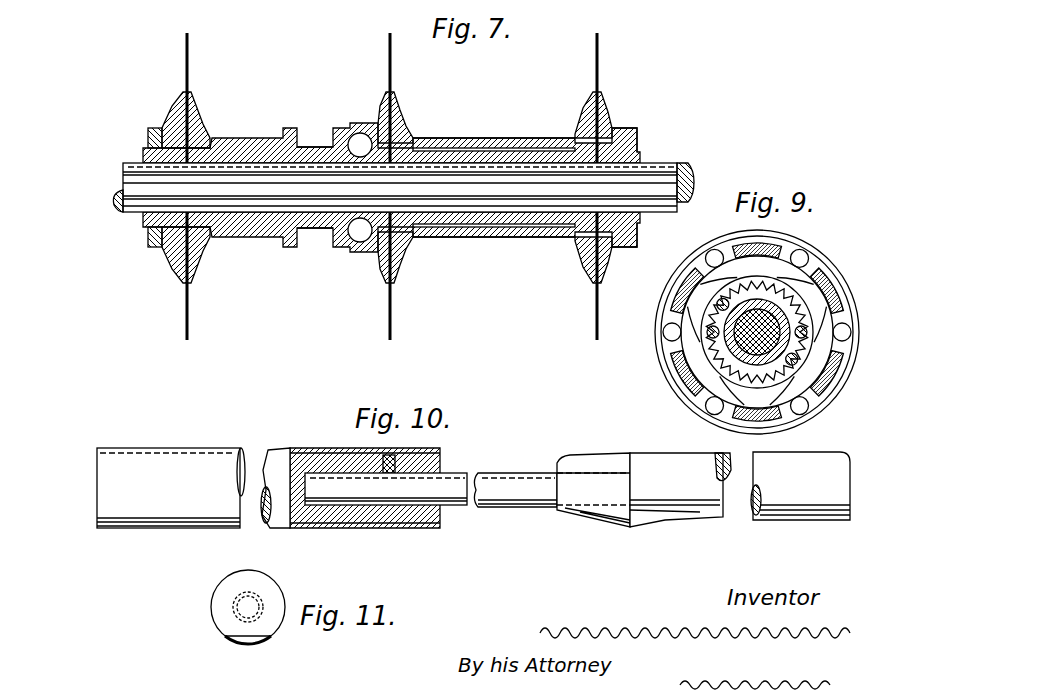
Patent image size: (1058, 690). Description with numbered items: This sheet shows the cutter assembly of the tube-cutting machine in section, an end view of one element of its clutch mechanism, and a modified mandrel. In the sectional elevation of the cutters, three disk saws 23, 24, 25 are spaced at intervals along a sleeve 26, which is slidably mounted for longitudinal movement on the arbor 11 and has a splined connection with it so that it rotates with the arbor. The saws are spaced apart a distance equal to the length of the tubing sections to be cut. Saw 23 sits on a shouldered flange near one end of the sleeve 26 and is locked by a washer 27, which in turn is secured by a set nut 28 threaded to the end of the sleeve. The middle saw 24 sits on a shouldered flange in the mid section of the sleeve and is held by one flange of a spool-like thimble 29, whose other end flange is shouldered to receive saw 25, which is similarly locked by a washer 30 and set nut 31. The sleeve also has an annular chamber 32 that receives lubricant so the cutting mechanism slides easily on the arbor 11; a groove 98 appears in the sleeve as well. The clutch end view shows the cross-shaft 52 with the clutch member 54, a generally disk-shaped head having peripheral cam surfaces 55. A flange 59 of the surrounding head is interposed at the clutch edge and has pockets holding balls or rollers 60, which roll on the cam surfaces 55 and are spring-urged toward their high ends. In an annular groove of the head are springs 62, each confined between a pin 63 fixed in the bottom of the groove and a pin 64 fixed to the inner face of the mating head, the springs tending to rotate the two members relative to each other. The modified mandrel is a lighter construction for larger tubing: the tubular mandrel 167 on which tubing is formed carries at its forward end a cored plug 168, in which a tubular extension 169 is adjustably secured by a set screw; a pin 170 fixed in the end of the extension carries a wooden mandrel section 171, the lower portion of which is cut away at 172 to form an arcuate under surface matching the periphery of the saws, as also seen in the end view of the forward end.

In FIG. 7, the arbor 11 is at (660, 162).
In FIG. 7, the saw 23 is at (190, 66).
In FIG. 7, the middle saw 24 is at (393, 80).
In FIG. 7, the saw 25 is at (600, 66).
In FIG. 7, the sleeve 26 is at (248, 140).
In FIG. 7, the washer 27 is at (172, 110).
In FIG. 7, the set nut 28 is at (150, 137).
In FIG. 7, the spool-like thimble 29 is at (498, 140).
In FIG. 7, the washer 30 is at (608, 104).
In FIG. 7, the set nut 31 is at (635, 130).
In FIG. 7, the annular chamber 32 is at (360, 133).
In FIG. 7, the groove 98 is at (316, 142).
In FIG. 9, the cross-shaft 52 is at (740, 352).
In FIG. 9, the clutch member 54 is at (712, 288).
In FIG. 9, the cam surfaces 55 is at (822, 292).
In FIG. 9, the flange 59 is at (780, 250).
In FIG. 9, the balls or rollers 60 is at (722, 230).
In FIG. 9, the springs 62 is at (726, 298).
In FIG. 9, the pin 63 is at (700, 342).
In FIG. 9, the pin 64 is at (798, 366).
In FIG. 10, the tubular mandrel 167 is at (300, 450).
In FIG. 10, the cored plug 168 is at (405, 528).
In FIG. 10, the tubular extension 169 is at (472, 508).
In FIG. 10, the pin 170 is at (598, 495).
In FIG. 11, the pin 170 is at (258, 600).
In FIG. 10, the wooden mandrel section 171 is at (655, 527).
In FIG. 11, the wooden mandrel section 171 is at (215, 607).
In FIG. 10, the cut-away portion 172 is at (760, 520).
In FIG. 11, the cut-away portion 172 is at (248, 640).